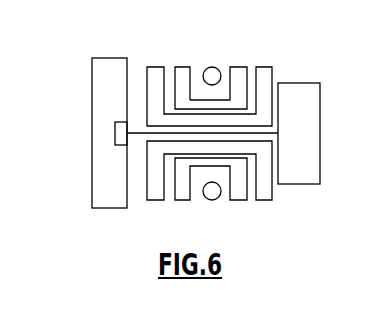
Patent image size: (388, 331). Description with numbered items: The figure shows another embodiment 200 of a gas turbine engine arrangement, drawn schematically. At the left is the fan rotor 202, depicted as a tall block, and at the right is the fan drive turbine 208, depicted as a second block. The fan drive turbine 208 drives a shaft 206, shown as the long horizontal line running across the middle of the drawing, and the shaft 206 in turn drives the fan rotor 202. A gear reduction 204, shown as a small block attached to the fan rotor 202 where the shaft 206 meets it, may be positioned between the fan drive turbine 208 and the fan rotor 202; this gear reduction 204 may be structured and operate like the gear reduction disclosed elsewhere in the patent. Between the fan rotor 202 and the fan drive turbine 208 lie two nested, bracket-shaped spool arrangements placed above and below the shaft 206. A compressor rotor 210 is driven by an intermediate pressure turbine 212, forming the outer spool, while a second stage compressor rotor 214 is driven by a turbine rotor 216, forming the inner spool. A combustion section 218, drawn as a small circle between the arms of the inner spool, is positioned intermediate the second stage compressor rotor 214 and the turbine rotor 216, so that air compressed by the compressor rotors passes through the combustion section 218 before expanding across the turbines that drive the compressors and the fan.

The embodiment 200 is at (66, 38).
The fan rotor 202 is at (100, 93).
The gear reduction 204 is at (119, 141).
The shaft 206 is at (263, 133).
The fan drive turbine 208 is at (310, 117).
The compressor rotor 210 is at (155, 180).
The intermediate pressure turbine 212 is at (263, 138).
The second stage compressor rotor 214 is at (181, 72).
The turbine rotor 216 is at (237, 68).
The combustion section 218 is at (211, 66).